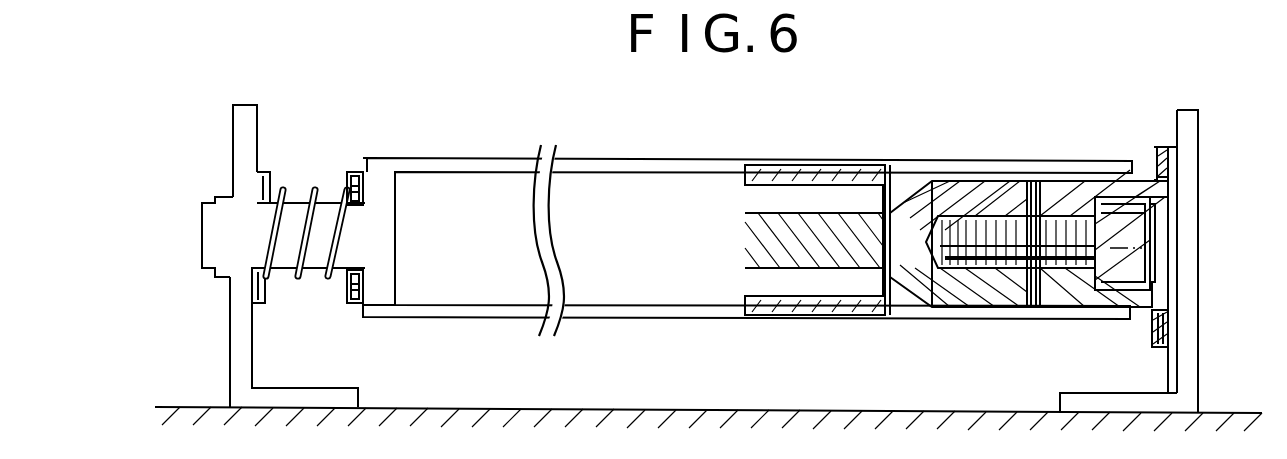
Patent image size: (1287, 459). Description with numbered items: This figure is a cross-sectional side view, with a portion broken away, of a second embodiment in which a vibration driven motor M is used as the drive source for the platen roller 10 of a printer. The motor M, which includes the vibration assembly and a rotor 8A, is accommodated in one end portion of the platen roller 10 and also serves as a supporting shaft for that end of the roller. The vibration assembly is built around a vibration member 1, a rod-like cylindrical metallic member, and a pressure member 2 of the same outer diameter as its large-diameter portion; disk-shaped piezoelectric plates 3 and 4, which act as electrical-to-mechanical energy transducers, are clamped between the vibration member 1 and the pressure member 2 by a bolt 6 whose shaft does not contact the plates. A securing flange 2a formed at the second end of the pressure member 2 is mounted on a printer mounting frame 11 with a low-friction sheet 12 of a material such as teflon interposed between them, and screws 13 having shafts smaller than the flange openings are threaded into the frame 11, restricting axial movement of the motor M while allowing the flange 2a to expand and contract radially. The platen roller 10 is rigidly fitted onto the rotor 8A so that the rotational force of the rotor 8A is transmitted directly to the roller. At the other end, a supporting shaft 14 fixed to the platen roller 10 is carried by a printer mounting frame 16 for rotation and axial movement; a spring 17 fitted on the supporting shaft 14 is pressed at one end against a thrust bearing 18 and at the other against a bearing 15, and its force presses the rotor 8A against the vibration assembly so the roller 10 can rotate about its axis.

The vibration member 1 is at (945, 189).
The pressure member 2 is at (1132, 160).
The securing flange 2a is at (1164, 350).
The piezoelectric plate 3 is at (1030, 193).
The piezoelectric plate 4 is at (1046, 203).
The bolt 6 is at (1061, 216).
The rotor 8A is at (867, 164).
The platen roller 10 is at (640, 160).
The printer mounting frame 11 is at (1198, 345).
The low-friction sheet 12 is at (1178, 112).
The screw 13 is at (1157, 146).
The supporting shaft 14 is at (313, 268).
The bearing 15 is at (265, 172).
The printer mounting frame 16 is at (231, 128).
The spring 17 is at (313, 190).
The thrust bearing 18 is at (352, 173).
The vibration driven motor M is at (984, 177).